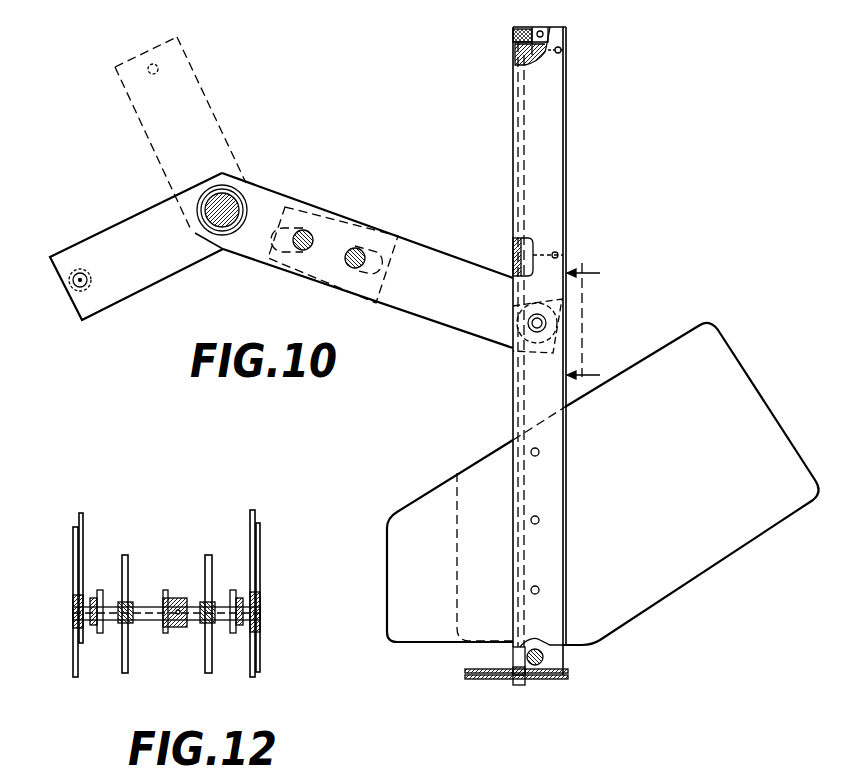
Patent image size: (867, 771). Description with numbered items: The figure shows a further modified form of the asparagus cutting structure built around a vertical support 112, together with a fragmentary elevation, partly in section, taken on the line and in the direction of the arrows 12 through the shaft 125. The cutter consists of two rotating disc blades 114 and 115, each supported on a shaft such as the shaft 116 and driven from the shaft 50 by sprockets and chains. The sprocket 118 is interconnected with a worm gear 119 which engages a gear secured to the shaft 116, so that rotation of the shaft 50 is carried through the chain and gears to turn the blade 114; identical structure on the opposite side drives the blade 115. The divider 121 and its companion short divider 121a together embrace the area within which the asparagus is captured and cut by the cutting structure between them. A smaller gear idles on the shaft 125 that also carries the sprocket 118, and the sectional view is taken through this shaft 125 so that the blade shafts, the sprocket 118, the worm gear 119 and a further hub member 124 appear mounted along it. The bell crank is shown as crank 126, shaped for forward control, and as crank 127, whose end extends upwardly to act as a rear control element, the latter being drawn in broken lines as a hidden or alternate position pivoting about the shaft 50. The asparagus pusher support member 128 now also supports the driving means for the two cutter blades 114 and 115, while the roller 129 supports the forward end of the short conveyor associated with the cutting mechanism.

In FIG. 10, the shaft 50 is at (215, 225).
In FIG. 10, the vertical support 112 is at (560, 477).
In FIG. 12, the vertical support 112 is at (73, 557).
In FIG. 10, the rotating disc blade 114 is at (477, 670).
In FIG. 10, the rotating disc blade 115 is at (482, 680).
In FIG. 10, the shaft 116 is at (518, 242).
In FIG. 12, the shaft 116 is at (130, 565).
In FIG. 12, the sprocket 118 is at (98, 635).
In FIG. 12, the worm gear 119 is at (130, 623).
In FIG. 10, the divider 121 is at (388, 552).
In FIG. 10, the short divider 121a is at (455, 495).
In FIG. 12, the spacer hub 124 is at (175, 632).
In FIG. 10, the shaft 125 is at (535, 326).
In FIG. 12, the shaft 125 is at (152, 606).
In FIG. 10, the bell crank 126 is at (128, 283).
In FIG. 10, the bell crank 127 is at (212, 125).
In FIG. 10, the asparagus pusher support member 128 is at (403, 295).
In FIG. 12, the asparagus pusher support member 128 is at (83, 538).
In FIG. 10, the roller 129 is at (543, 662).
In FIG. 10, the section line 12— 12 is at (596, 313).